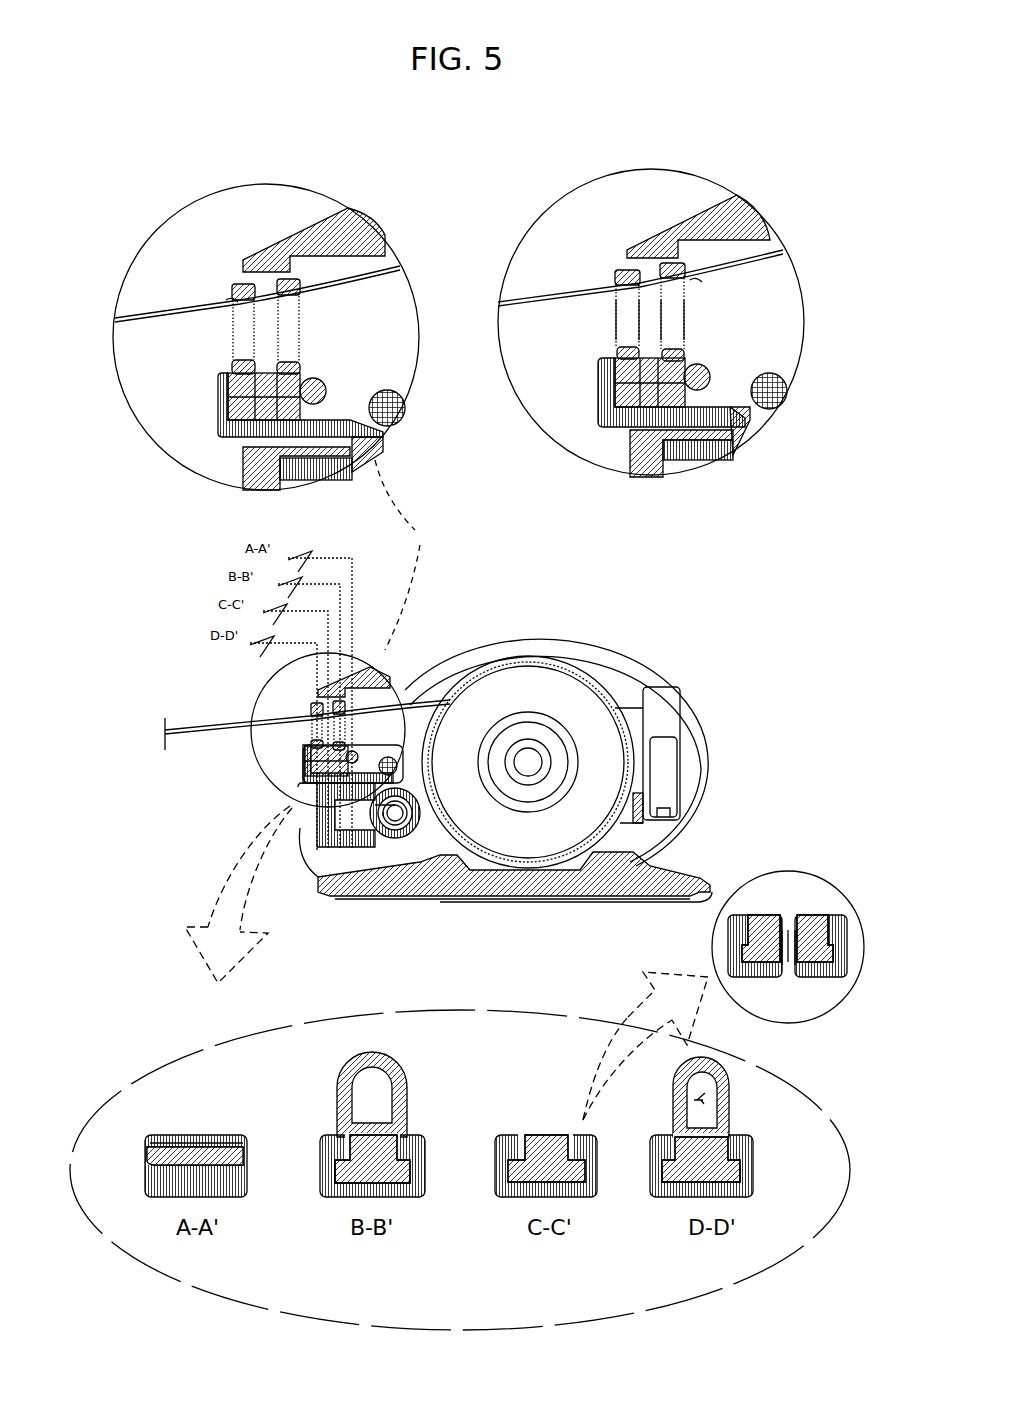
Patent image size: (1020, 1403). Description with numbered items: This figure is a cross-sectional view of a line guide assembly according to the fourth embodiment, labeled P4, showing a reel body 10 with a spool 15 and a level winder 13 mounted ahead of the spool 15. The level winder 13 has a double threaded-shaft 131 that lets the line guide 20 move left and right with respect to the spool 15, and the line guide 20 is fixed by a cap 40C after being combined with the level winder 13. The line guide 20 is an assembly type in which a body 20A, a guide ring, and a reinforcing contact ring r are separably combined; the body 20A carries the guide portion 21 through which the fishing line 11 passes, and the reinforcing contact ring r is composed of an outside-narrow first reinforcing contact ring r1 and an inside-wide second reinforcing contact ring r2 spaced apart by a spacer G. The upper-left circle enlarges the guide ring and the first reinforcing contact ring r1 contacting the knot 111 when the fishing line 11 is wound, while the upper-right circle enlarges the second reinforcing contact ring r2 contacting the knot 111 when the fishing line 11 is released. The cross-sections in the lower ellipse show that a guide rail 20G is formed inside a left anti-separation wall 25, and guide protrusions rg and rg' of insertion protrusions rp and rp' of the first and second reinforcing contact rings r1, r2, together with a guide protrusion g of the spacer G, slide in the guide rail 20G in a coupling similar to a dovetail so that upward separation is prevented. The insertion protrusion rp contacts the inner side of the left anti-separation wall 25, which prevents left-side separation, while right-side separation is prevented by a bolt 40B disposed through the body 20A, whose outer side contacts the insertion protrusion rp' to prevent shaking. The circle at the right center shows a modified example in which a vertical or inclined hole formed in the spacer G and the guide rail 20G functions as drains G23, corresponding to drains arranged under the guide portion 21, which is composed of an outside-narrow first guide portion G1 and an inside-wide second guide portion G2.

The reel body 10 is at (612, 672).
The fishing line 11 is at (425, 695).
The knot 111 is at (230, 302).
The level winder 13 is at (409, 862).
The double threaded-shaft 131 is at (458, 890).
The spool 15 is at (527, 680).
The line guide 20 is at (297, 741).
The body 20A is at (295, 782).
The guide rail 20G is at (464, 1210).
The guide portion 21 is at (453, 380).
The left anti-separation wall 25 is at (218, 378).
The bolt 40B is at (326, 393).
The cap 40C is at (320, 832).
The spacer G is at (272, 365).
The first guide portion G1 is at (618, 316).
The second guide portion G2 is at (665, 323).
The drains G23 is at (788, 947).
The reinforcing contact ring r is at (166, 147).
The first reinforcing contact ring r1 is at (238, 282).
The second reinforcing contact ring r2 is at (284, 281).
The guide protrusion rg is at (661, 1219).
The guide protrusion rg' is at (311, 1226).
The insertion protrusion rp is at (747, 1203).
The insertion protrusion rp' is at (409, 1215).
The guide protrusion g is at (525, 1185).
The portion P4 is at (63, 169).